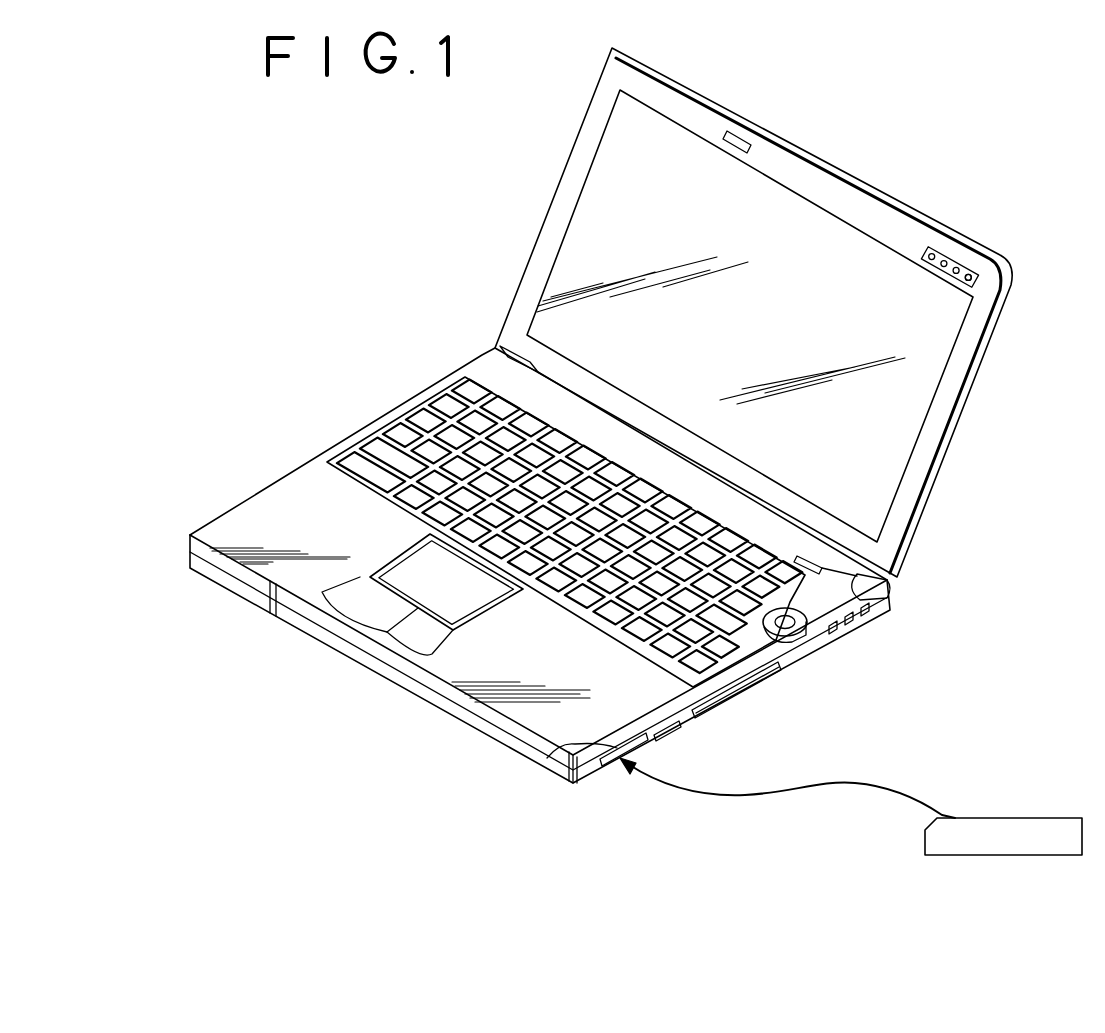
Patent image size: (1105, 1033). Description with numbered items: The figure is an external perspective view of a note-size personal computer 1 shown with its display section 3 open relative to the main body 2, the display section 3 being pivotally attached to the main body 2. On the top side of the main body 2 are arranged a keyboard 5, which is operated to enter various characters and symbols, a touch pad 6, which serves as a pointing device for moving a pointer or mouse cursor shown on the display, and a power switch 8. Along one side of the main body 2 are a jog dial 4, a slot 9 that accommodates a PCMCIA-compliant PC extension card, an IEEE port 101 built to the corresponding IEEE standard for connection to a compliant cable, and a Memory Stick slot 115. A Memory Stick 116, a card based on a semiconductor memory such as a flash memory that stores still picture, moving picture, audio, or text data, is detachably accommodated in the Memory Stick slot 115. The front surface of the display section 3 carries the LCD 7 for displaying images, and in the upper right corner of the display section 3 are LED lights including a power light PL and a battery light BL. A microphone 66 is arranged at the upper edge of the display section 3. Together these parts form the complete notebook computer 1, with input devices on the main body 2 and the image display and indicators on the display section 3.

The personal computer 1 is at (591, 862).
The main body 2 is at (797, 652).
The display section 3 is at (977, 378).
The jog dial 4 is at (833, 633).
The keyboard 5 is at (397, 437).
The touch pad 6 is at (432, 586).
The LCD 7 is at (887, 413).
The power switch 8 is at (888, 598).
The slot 9 is at (727, 700).
The microphone 66 is at (743, 141).
The IEEE 1394 port 101 is at (667, 737).
The Memory Stick slot 115 is at (560, 760).
The Memory Stick 116 is at (1027, 818).
The battery light BL is at (955, 262).
The power light PL is at (970, 278).